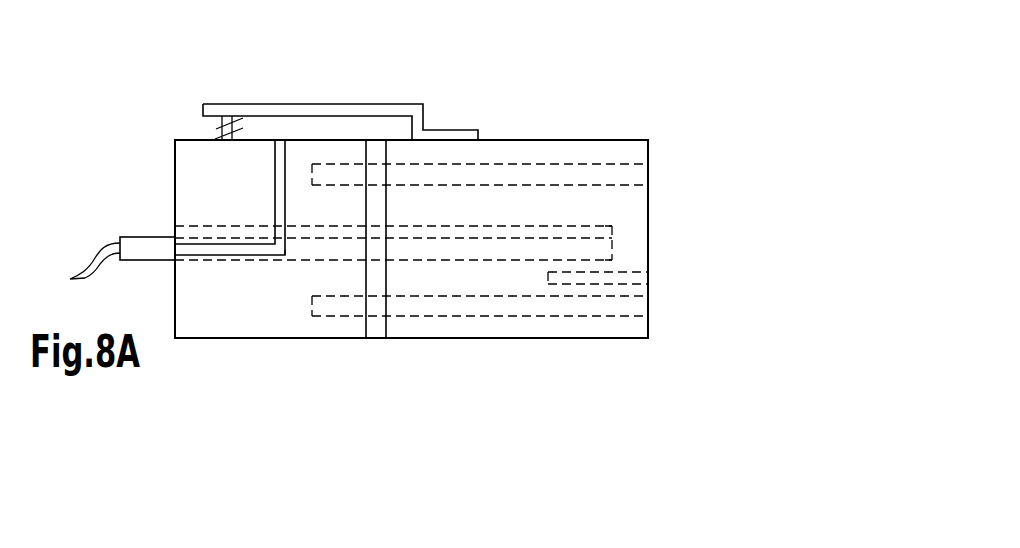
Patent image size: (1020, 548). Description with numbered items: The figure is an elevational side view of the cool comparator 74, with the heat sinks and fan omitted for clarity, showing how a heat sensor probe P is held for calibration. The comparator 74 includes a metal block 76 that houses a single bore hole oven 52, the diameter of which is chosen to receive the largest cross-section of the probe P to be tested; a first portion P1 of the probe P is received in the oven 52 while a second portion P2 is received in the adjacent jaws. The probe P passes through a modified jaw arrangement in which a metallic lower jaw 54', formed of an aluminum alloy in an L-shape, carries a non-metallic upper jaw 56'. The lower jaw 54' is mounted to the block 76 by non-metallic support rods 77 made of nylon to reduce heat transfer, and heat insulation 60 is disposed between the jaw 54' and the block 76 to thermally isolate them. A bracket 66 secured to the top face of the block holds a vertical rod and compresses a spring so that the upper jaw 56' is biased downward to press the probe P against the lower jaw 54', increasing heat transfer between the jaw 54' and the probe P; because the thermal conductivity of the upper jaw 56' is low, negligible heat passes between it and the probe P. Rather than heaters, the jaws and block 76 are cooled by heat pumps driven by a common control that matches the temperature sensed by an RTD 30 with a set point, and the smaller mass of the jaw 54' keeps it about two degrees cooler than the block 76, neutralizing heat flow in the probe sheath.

The cool comparator 74 is at (546, 57).
The bracket 66 is at (377, 104).
The upper jaw 56' is at (126, 188).
The sensor probe P is at (158, 220).
The lower jaw 54' is at (214, 314).
The second portion of the probe P2 is at (308, 260).
The heat insulation 60 is at (376, 328).
The metal block 76 is at (549, 328).
The support rods 77 is at (630, 163).
The first portion of the probe P1 is at (547, 238).
The bore hole oven 52 is at (620, 227).
The RTD 30 is at (622, 272).